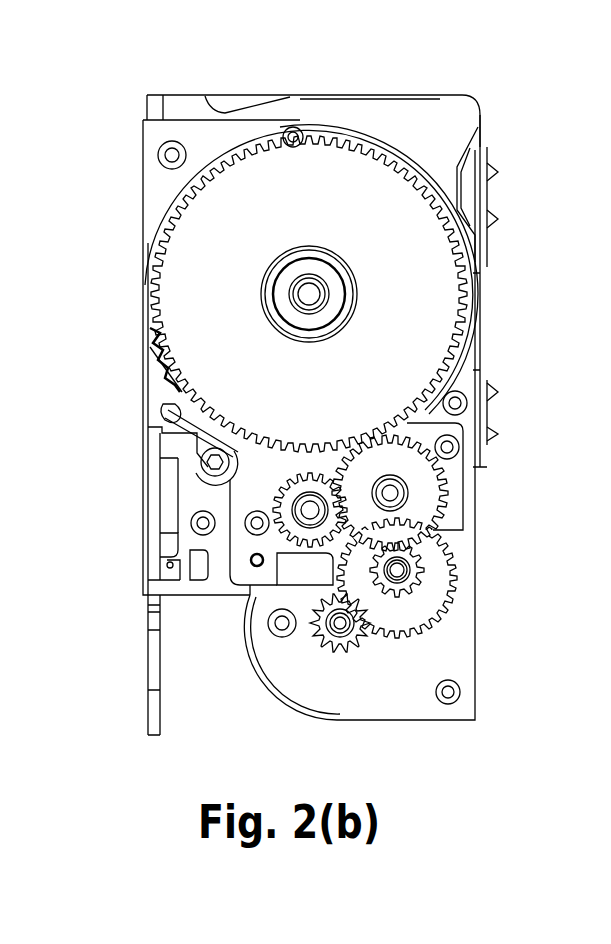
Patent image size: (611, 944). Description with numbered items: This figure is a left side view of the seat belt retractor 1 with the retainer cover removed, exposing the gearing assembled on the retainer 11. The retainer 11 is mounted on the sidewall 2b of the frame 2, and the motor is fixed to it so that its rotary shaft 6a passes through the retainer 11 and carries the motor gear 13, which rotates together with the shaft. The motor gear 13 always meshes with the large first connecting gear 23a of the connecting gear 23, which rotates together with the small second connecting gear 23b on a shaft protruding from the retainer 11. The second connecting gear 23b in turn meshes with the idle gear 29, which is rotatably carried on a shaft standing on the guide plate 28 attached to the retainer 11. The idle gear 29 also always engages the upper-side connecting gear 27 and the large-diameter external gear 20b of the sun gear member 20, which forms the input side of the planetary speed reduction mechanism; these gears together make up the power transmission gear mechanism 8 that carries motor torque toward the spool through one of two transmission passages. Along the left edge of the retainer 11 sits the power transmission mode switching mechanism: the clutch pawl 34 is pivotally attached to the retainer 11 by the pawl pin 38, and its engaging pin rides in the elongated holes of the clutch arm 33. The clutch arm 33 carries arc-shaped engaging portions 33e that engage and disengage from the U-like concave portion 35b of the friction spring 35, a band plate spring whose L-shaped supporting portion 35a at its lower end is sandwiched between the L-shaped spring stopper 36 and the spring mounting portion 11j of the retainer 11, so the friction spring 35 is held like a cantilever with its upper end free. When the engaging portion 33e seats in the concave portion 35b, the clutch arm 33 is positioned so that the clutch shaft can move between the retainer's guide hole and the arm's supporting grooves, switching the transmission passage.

The seat belt retractor 1 is at (352, 84).
The frame 2 is at (204, 88).
The sidewall 2b is at (427, 121).
The retainer 11 is at (157, 182).
The spring mounting portion 11j is at (187, 595).
The sun gear member 20 is at (309, 218).
The large-diameter external gear 20b is at (158, 246).
The pawl pin 38 is at (157, 352).
The clutch pawl 34 is at (160, 378).
The engaging portion 33e is at (163, 410).
The concave portion 35b is at (160, 428).
The clutch arm 33 is at (180, 444).
The friction spring 35 is at (172, 483).
The spring stopper 36 is at (160, 540).
The supporting portion 35a is at (163, 557).
The power transmission gear mechanism 8 is at (298, 597).
The upper-side connecting gear 27 is at (309, 581).
The guide plate 28 is at (450, 481).
The idle gear 29 is at (433, 503).
The connecting gear 23 is at (436, 576).
The second connecting gear 23b is at (433, 600).
The first connecting gear 23a is at (435, 625).
The motor gear 13 is at (350, 640).
The rotary shaft 6a is at (340, 648).